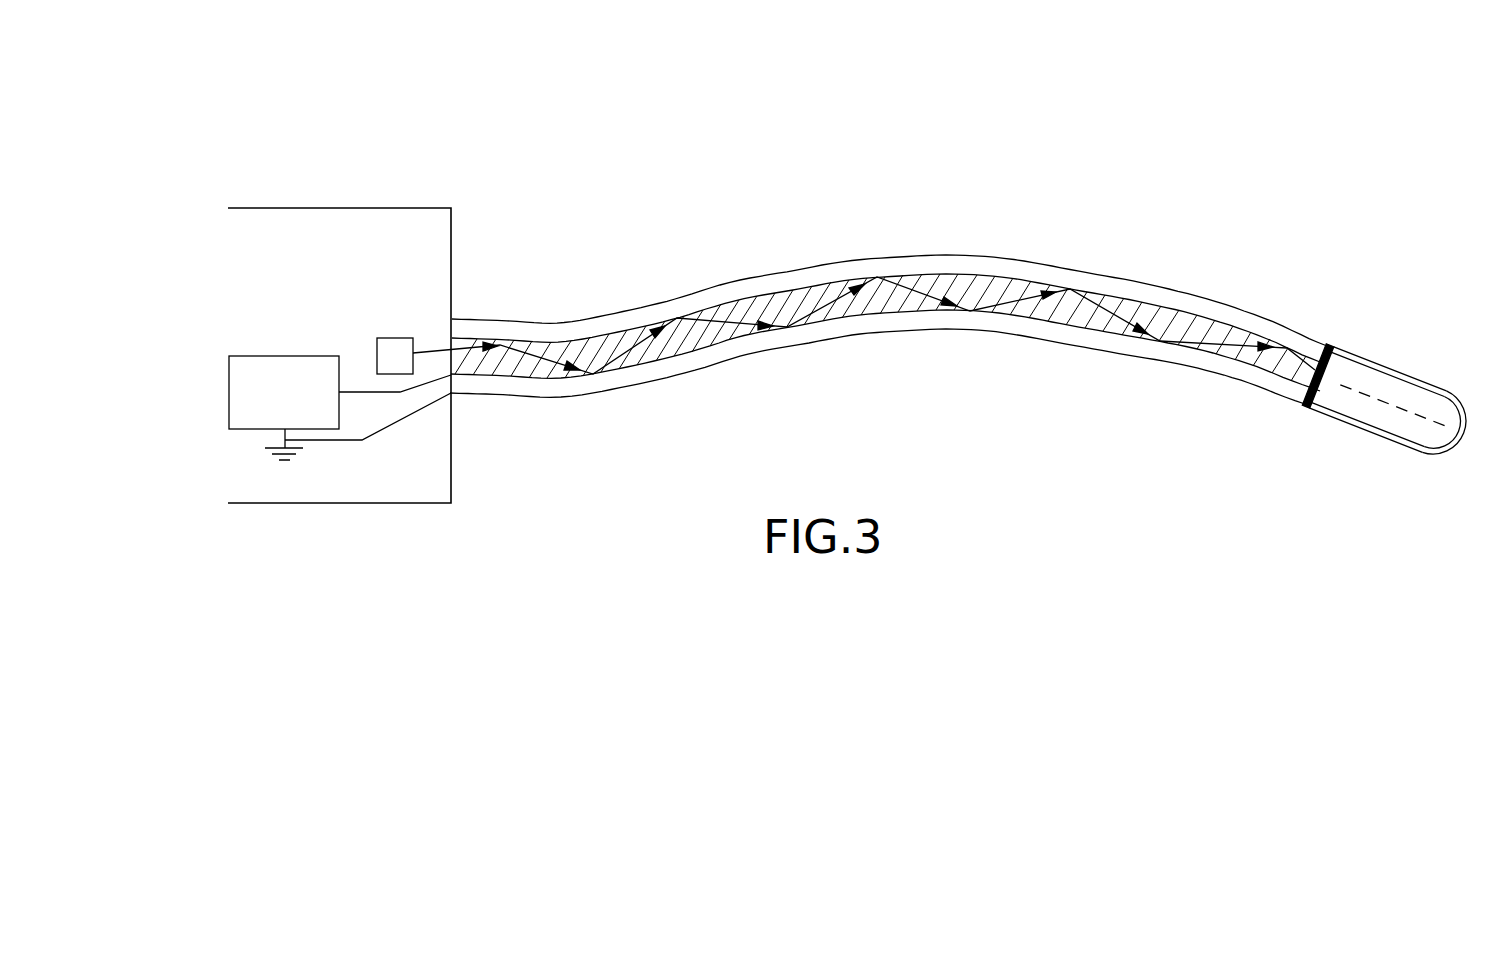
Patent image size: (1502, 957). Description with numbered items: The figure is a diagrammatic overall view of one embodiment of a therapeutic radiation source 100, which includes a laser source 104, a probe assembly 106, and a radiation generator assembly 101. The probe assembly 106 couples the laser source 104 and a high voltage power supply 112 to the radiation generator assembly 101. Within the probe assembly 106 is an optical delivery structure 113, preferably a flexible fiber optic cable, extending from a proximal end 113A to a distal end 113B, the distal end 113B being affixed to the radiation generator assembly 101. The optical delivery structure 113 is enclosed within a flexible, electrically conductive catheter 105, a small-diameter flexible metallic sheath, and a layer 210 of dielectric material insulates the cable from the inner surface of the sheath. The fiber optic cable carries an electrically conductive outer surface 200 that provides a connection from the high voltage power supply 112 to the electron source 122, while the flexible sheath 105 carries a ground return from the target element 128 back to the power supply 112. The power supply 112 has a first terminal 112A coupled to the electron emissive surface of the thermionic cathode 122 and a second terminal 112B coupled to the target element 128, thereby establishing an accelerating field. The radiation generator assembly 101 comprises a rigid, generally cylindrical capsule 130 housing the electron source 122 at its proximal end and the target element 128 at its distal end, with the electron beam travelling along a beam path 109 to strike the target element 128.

The therapeutic radiation source 100 is at (1097, 168).
The radiation generator assembly 101 is at (1400, 418).
The laser source 104 is at (395, 338).
The flexible electrically conductive catheter 105 is at (855, 335).
The probe assembly 106 is at (977, 383).
The beam path 109 is at (1383, 400).
The high voltage power supply 112 is at (302, 355).
The first terminal 112A is at (332, 391).
The second terminal 112B is at (273, 423).
The optical delivery structure 113 is at (708, 307).
The proximal end 113A is at (453, 378).
The distal end 113B is at (1297, 393).
The electron source 122 is at (1327, 345).
The target element 128 is at (1460, 430).
The capsule 130 is at (1393, 441).
The electrically conductive outer surface 200 is at (788, 288).
The layer of dielectric material 210 is at (1110, 343).